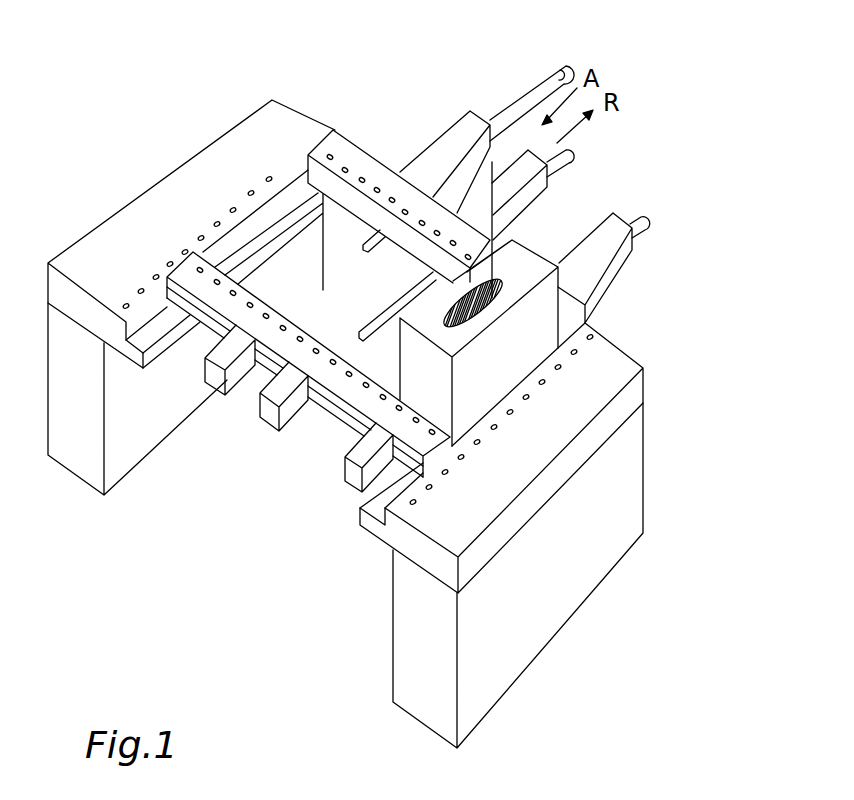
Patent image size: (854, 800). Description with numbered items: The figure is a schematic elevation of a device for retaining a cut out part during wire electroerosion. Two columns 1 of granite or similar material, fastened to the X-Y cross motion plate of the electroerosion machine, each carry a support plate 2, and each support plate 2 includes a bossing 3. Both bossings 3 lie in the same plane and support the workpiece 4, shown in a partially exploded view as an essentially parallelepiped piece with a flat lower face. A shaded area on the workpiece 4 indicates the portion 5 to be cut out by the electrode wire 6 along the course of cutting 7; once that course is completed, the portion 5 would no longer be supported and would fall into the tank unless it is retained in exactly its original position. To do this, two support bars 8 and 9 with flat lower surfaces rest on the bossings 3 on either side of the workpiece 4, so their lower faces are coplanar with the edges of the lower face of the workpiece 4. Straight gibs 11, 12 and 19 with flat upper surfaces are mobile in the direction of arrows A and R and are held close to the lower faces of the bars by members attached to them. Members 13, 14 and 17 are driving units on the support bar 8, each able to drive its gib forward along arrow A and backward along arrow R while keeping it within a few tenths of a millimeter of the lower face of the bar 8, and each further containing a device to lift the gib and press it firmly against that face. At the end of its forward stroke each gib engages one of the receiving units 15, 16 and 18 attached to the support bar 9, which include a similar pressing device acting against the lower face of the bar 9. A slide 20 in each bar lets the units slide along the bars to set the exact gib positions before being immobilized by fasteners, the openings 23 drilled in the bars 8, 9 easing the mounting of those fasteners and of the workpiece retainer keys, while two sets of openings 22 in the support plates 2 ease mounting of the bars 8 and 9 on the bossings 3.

The columns 1 is at (122, 453).
The support plate 2 is at (87, 257).
The bossing 3 is at (152, 336).
The workpiece 4 is at (490, 397).
The portion of the workpiece 5 is at (492, 312).
The electrode wire 6 is at (493, 258).
The course of cutting 7 is at (508, 296).
The support bar 8 is at (334, 130).
The support bar 9 is at (190, 272).
The gib 11 is at (548, 82).
The gib 12 is at (568, 170).
The driving unit 13 is at (452, 147).
The driving unit 14 is at (529, 196).
The receiving unit 15 is at (213, 381).
The receiving unit 16 is at (268, 416).
The driving unit 17 is at (611, 258).
The receiving unit 18 is at (350, 481).
The gib 19 is at (640, 224).
The slide 20 is at (328, 414).
The openings 22 is at (250, 190).
The openings 23 is at (246, 288).